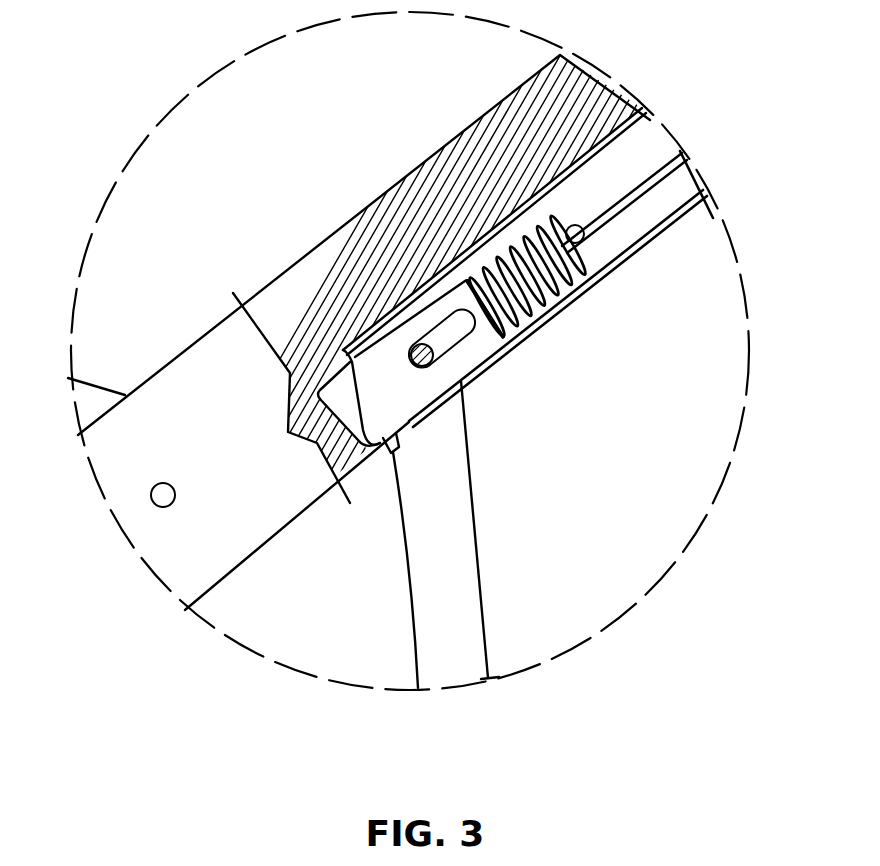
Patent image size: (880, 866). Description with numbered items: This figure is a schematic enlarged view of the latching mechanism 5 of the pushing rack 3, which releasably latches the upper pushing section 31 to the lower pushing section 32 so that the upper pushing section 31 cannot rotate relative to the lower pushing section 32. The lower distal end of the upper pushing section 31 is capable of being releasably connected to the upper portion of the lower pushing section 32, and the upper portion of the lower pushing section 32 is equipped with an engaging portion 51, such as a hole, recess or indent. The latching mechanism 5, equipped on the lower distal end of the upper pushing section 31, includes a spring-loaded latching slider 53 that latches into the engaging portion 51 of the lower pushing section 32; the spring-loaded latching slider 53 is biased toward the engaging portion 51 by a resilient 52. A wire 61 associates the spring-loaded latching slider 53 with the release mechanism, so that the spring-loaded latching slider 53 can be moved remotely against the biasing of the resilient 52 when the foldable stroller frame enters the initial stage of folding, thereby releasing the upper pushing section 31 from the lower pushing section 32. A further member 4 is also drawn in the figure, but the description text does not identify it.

The pushing rack 3 is at (280, 192).
The upper pushing section 31 is at (637, 234).
The lower pushing section 32 is at (190, 354).
The connecting arm 4 is at (476, 582).
The latching mechanism 5 is at (493, 398).
The engaging portion 51 is at (352, 430).
The resilient 52 is at (575, 288).
The spring-loaded latching slider 53 is at (472, 360).
The wire 61 is at (663, 177).